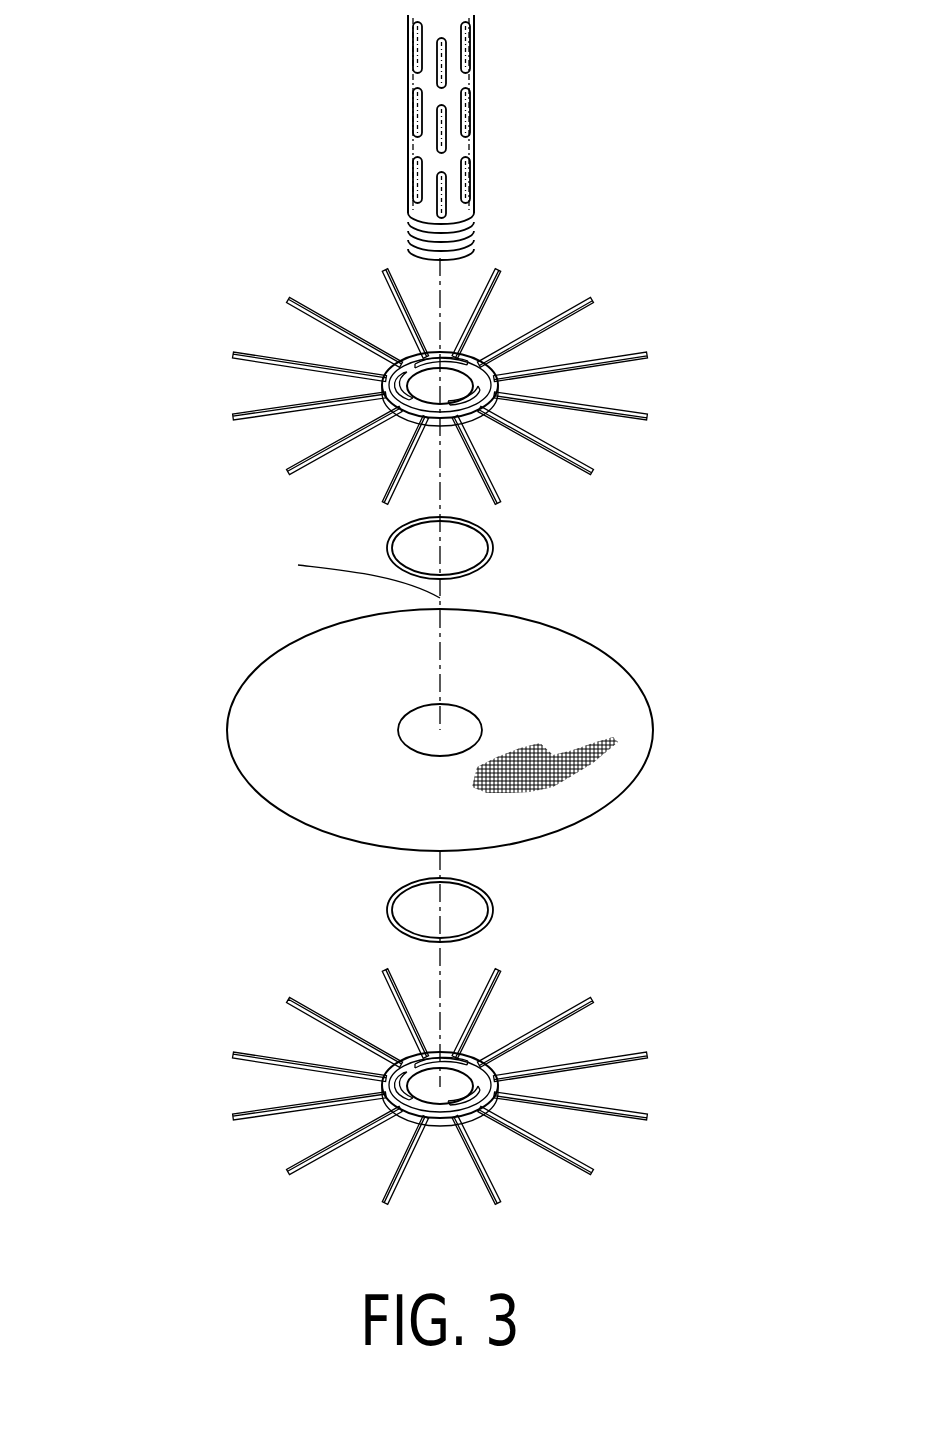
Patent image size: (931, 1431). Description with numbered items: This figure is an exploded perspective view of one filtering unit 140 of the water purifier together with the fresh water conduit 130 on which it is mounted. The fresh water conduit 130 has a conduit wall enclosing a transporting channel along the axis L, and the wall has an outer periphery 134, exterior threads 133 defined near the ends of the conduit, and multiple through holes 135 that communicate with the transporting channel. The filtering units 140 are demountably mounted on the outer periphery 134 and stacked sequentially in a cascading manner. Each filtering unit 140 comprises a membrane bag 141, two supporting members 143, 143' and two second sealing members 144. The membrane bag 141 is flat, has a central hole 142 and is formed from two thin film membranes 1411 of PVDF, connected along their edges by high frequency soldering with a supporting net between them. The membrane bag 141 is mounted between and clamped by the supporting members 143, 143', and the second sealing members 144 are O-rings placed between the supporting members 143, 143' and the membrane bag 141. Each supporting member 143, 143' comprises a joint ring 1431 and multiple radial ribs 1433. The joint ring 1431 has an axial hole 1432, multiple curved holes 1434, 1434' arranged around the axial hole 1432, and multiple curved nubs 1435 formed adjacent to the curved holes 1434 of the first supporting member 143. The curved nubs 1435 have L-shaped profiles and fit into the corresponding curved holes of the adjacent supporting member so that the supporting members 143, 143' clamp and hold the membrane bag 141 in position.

The fresh water conduit 130 is at (392, 135).
The exterior thread 133 is at (470, 233).
The outer periphery 134 is at (463, 145).
The through hole 135 is at (467, 112).
The filtering unit 140 is at (222, 545).
The membrane bag 141 is at (585, 627).
The thin film membrane 1411 is at (617, 778).
The central hole 142 is at (420, 720).
The supporting member 143 is at (505, 384).
The joint ring 1431 is at (437, 430).
The axial hole 1432 is at (420, 350).
The radial rib 1433 is at (607, 370).
The curved hole 1434 is at (468, 384).
The curved nub 1435 is at (488, 350).
The second sealing member 144 is at (493, 548).
The curved hole 1434' is at (440, 1075).
The supporting member 143' is at (440, 1098).